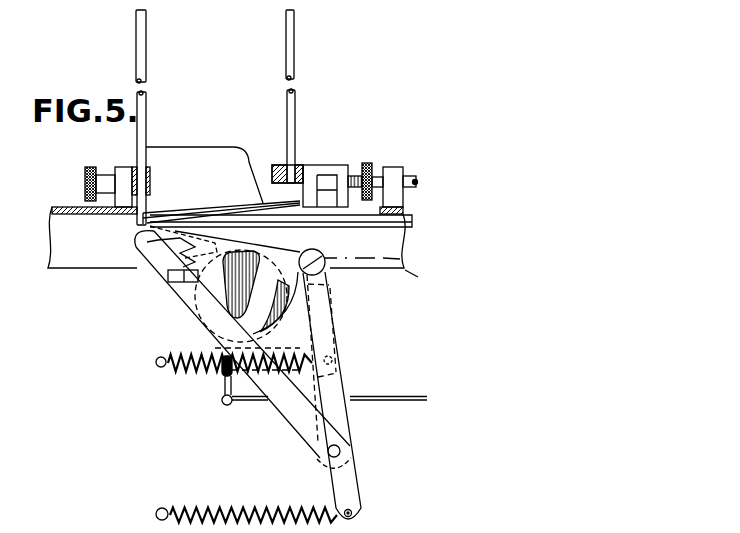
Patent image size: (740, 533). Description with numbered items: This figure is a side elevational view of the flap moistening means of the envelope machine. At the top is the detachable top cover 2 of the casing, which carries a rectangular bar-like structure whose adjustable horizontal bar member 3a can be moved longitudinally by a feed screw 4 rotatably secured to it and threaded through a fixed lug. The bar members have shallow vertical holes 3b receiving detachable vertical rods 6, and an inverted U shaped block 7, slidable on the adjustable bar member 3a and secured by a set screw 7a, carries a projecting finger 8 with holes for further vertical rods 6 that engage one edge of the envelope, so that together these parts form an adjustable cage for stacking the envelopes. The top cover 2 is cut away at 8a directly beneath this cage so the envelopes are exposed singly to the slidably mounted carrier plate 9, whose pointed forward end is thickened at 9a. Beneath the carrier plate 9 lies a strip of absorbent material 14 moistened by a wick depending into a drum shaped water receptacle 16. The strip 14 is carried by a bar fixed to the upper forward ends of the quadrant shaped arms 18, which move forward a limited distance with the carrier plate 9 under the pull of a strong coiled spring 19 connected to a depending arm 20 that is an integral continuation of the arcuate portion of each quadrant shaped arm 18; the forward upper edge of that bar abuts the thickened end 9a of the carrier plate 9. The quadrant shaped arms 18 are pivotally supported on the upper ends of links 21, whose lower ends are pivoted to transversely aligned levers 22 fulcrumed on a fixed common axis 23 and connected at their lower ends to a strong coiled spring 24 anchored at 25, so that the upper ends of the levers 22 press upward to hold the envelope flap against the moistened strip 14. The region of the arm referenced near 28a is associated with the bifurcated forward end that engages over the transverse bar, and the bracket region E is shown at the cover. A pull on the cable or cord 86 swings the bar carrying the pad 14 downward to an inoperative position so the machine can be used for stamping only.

The detachable top cover 2 is at (57, 207).
The adjustable horizontal bar member 3a is at (340, 177).
The shallow vertical holes 3b is at (322, 117).
The feed screw 4 is at (403, 177).
The detachable vertical rods 6 is at (147, 67).
The inverted U shaped block 7 is at (325, 180).
The set screw 7a is at (368, 173).
The projecting finger 8 is at (275, 163).
The cut away portion of top cover 8a is at (168, 210).
The carrier plate 9 is at (373, 227).
The thickened pointed forward end of carrier plate 9a is at (157, 232).
The strip of absorbent material 14 is at (183, 265).
The drum shaped water receptacle 16 is at (275, 307).
The quadrant shaped arms 18 is at (240, 237).
The coiled spring 19 is at (187, 375).
The depending arm 20 is at (330, 346).
The links 21 is at (337, 390).
The transversely aligned levers 22 is at (293, 418).
The fixed common axis 23 is at (340, 452).
The coiled spring 24 is at (230, 510).
The anchor 25 is at (162, 508).
The cam 28a is at (188, 328).
The cable or cord 86 is at (412, 400).
The bracket E is at (258, 190).